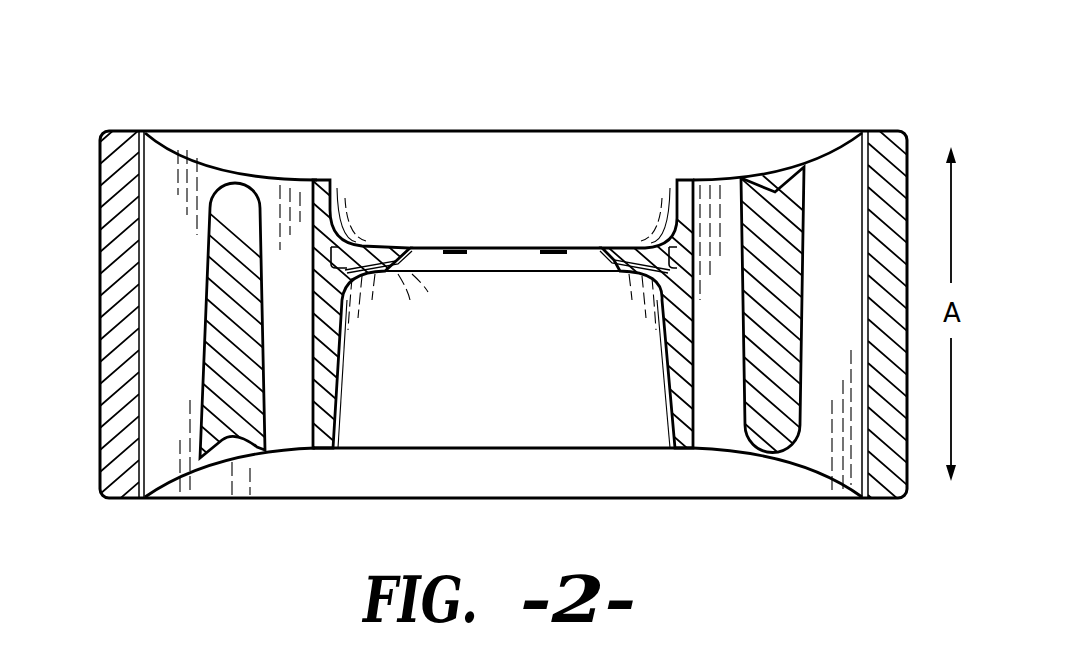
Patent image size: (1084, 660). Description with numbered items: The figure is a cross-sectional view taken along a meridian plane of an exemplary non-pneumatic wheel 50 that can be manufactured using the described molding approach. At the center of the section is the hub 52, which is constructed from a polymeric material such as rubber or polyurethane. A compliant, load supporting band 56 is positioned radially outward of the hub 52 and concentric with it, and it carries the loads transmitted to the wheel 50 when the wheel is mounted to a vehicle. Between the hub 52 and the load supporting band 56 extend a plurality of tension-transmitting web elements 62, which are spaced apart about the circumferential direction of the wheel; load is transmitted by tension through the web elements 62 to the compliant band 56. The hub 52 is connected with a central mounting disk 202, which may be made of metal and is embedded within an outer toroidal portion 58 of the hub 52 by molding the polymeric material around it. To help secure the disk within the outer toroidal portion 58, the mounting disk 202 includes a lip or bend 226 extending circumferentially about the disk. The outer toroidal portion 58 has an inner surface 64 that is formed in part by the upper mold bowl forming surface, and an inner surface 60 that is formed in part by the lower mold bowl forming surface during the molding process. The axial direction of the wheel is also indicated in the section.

The non-pneumatic wheel 50 is at (748, 83).
The hub 52 is at (445, 200).
The load supporting band 56 is at (126, 130).
The outer toroidal portion 58 is at (327, 350).
The inner surface 60 is at (668, 398).
The tension-transmitting web elements 62 is at (172, 183).
The inner surface 64 is at (657, 236).
The central mounting disk 202 is at (452, 247).
The lip or bend 226 is at (357, 310).